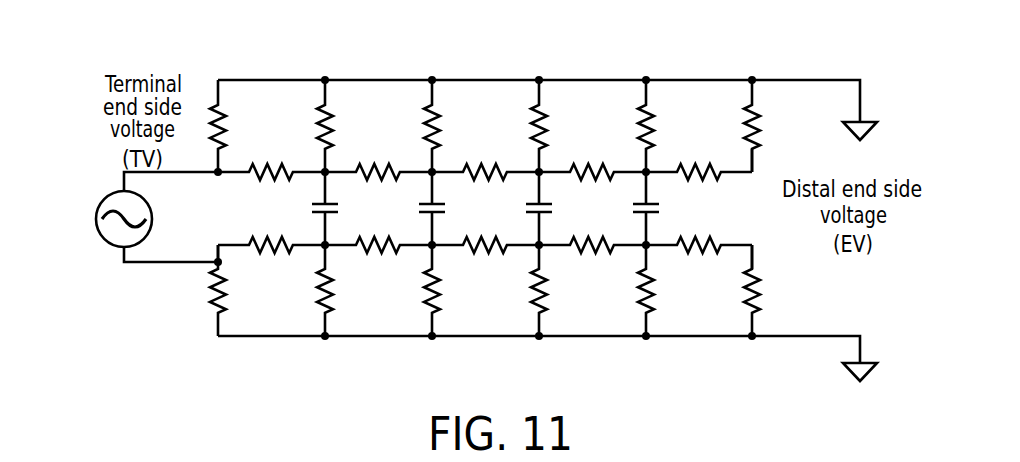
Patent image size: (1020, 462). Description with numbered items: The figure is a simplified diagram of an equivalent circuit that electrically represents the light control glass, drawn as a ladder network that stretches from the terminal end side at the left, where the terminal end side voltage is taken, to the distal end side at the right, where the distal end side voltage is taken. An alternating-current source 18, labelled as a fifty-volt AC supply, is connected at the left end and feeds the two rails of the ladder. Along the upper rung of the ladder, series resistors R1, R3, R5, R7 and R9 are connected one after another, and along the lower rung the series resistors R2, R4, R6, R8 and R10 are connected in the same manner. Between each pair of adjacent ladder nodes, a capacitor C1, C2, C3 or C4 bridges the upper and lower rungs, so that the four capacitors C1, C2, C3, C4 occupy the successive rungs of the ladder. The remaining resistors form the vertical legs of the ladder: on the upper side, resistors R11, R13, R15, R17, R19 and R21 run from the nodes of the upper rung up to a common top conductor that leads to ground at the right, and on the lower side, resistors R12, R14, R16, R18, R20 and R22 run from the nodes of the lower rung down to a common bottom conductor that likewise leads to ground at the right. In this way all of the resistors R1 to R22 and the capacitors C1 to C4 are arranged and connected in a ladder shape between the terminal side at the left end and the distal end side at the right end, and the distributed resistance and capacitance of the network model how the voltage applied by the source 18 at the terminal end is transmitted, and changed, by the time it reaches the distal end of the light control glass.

The AC power source V1 (AC50V) 18 is at (108, 194).
The resistor R1 is at (277, 165).
The resistor R2 is at (277, 250).
The resistor R3 is at (384, 165).
The resistor R4 is at (384, 250).
The resistor R5 is at (491, 165).
The resistor R6 is at (492, 250).
The resistor R7 is at (598, 165).
The resistor R8 is at (599, 250).
The resistor R9 is at (707, 165).
The resistor R10 is at (706, 250).
The resistor R11 is at (233, 111).
The resistor R12 is at (228, 311).
The resistor R13 is at (339, 111).
The resistor R14 is at (335, 309).
The resistor R15 is at (446, 111).
The resistor R16 is at (442, 308).
The resistor R17 is at (553, 111).
The resistor R18 is at (549, 308).
The resistor R19 is at (660, 111).
The resistor R20 is at (656, 308).
The resistor R21 is at (766, 111).
The resistor R22 is at (762, 308).
The capacitor C1 is at (340, 211).
The capacitor C2 is at (447, 211).
The capacitor C3 is at (554, 211).
The capacitor C4 is at (661, 211).